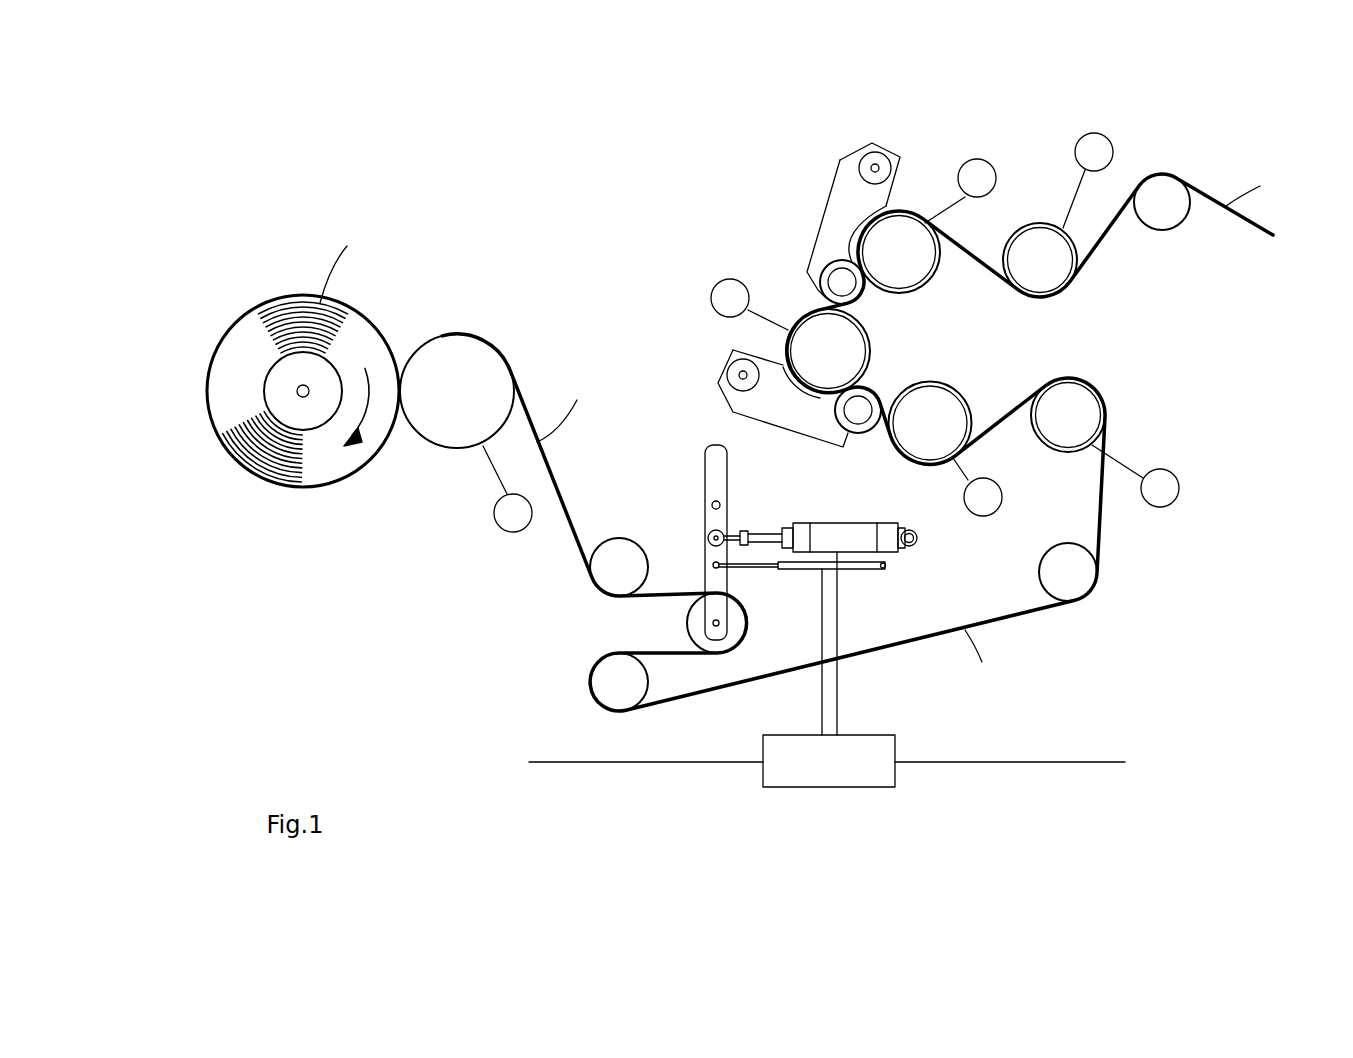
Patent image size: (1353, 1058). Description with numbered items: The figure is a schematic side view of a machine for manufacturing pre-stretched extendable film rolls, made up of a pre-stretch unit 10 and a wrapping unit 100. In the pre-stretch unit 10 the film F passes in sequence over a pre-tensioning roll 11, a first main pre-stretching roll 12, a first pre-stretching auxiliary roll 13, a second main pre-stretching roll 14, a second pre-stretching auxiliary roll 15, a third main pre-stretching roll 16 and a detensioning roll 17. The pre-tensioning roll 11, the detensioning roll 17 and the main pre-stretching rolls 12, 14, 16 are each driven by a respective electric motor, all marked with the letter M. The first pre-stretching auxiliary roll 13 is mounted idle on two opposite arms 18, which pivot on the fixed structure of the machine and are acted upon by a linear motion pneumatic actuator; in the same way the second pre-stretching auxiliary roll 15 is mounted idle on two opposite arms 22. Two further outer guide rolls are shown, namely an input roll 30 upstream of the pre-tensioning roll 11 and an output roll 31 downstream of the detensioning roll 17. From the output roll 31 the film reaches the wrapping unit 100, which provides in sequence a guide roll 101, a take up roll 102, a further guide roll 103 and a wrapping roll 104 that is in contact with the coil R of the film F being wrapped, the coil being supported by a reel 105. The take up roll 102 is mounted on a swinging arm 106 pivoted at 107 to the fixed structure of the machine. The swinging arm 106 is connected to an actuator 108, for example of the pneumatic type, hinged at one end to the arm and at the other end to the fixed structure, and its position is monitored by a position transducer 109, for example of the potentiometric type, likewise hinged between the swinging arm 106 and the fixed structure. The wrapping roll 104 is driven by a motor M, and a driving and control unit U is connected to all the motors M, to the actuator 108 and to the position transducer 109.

The pre-stretch unit 10 is at (1088, 328).
The pre-tensioning roll 11 is at (1040, 242).
The first main pre-stretching roll 12 is at (909, 230).
The first pre-stretching auxiliary roll 13 is at (862, 290).
The second main pre-stretching roll 14 is at (850, 362).
The second pre-stretching auxiliary roll 15 is at (872, 427).
The third main pre-stretching roll 16 is at (948, 413).
The detensioning roll 17 is at (1080, 402).
The arm 18 is at (840, 185).
The arm 22 is at (745, 404).
The input roll 30 is at (1157, 186).
The output roll 31 is at (1085, 586).
The wrapping unit 100 is at (565, 331).
The guide roll 101 is at (610, 688).
The take up roll 102 is at (740, 623).
The further guide roll 103 is at (609, 584).
The wrapping roll 104 is at (457, 350).
The reel 105 is at (280, 380).
The swinging arm 106 is at (712, 580).
The pivot 107 is at (710, 504).
The actuator 108 is at (840, 540).
The position transducer 109 is at (855, 568).